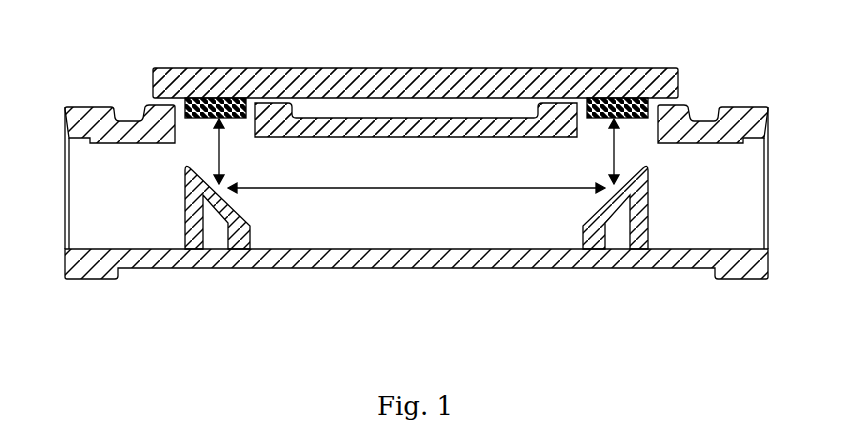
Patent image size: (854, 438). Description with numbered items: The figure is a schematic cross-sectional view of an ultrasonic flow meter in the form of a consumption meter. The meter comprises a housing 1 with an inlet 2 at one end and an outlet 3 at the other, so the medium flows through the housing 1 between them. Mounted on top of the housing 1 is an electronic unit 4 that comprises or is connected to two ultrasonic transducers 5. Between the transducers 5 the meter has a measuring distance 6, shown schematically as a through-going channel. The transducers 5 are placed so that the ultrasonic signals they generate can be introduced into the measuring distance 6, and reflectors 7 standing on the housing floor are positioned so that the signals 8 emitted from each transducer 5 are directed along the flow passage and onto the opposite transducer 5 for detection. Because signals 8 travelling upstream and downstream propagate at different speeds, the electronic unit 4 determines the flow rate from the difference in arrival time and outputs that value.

The housing 1 is at (495, 268).
The inlet 2 is at (735, 213).
The outlet 3 is at (84, 206).
The electronic unit 4 is at (650, 68).
The ultrasonic transducers 5 is at (625, 120).
The measuring distance 6 is at (407, 236).
The reflectors 7 is at (645, 237).
The signals 8 is at (427, 188).